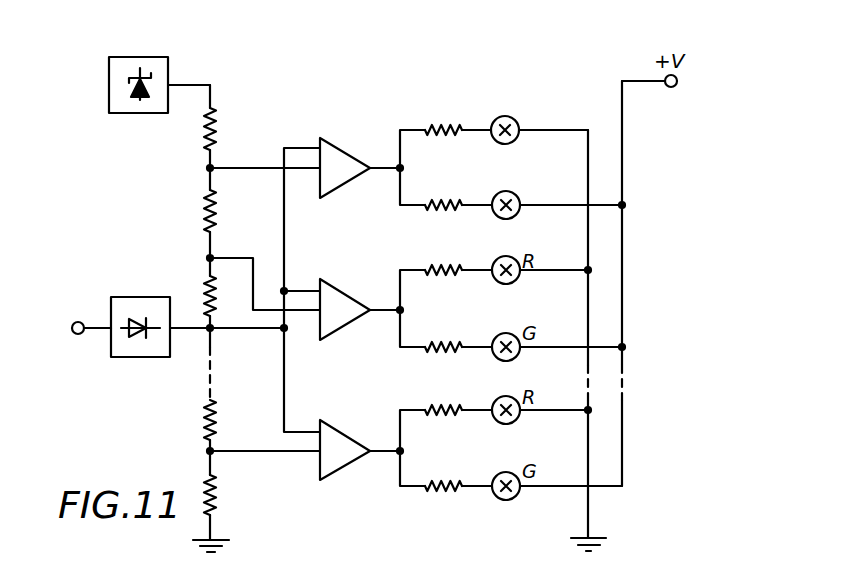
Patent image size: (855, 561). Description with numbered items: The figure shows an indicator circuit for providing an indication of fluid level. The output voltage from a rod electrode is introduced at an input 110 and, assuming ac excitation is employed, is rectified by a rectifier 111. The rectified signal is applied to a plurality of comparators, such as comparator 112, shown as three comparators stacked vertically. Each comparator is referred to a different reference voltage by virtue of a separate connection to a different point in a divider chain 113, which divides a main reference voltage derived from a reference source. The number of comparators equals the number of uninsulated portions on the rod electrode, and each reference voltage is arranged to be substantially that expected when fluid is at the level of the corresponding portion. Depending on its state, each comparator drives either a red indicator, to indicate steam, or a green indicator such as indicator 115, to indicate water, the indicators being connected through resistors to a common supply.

The input 110 is at (78, 322).
The rectifier 111 is at (155, 357).
The comparator 112 is at (340, 146).
The divider chain 113 is at (210, 424).
The green indicator 115 is at (502, 191).